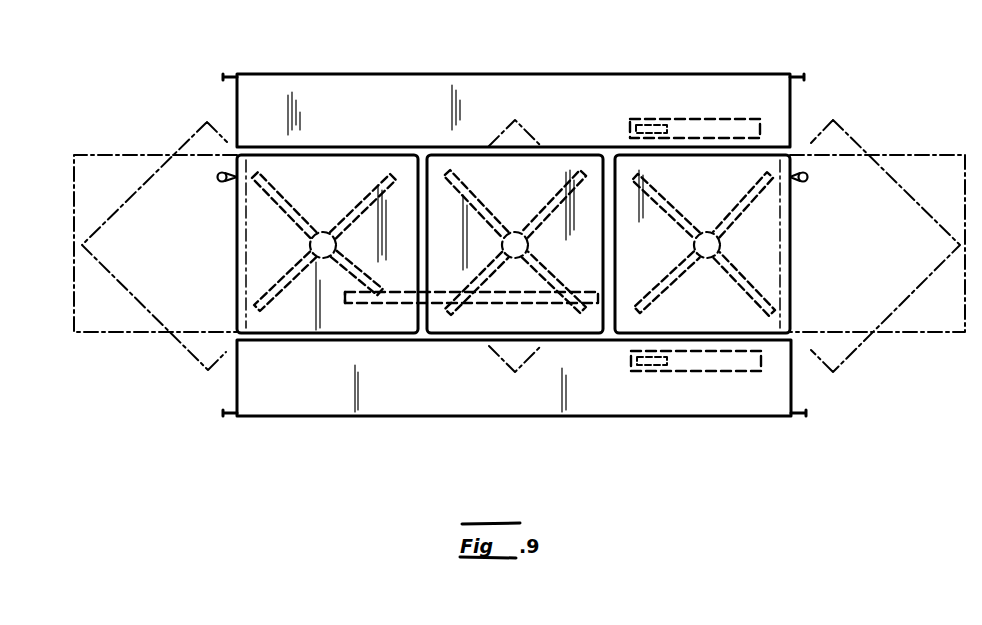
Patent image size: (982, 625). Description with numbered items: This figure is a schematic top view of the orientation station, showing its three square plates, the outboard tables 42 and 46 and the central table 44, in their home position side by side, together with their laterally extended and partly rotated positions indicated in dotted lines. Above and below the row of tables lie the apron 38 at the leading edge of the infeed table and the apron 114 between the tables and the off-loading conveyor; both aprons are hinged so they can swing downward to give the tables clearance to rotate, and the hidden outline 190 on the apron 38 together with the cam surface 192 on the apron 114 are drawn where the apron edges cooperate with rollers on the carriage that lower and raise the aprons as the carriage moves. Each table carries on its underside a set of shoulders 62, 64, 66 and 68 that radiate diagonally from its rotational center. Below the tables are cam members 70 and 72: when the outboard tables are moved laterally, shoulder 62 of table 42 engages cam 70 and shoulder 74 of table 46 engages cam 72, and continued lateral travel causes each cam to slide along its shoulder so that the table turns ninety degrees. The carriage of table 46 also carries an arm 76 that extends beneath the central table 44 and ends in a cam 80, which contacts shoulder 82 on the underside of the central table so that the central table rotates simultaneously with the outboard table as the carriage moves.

The apron 38 is at (604, 73).
The apron 114 is at (608, 402).
The square plate (outboard orientation table) 46 is at (358, 172).
The square plate (central orientation table) 44 is at (543, 172).
The square plate (outboard orientation table) 42 is at (773, 253).
The upper latch bracket 190 is at (683, 127).
The cam surface 192 is at (718, 358).
The cam member 72 is at (218, 180).
The cam member 70 is at (806, 185).
The shoulder 74 is at (275, 207).
The shoulder 82 is at (533, 257).
The cam 80 is at (593, 297).
The arm 76 is at (470, 304).
The shoulder 68 is at (624, 265).
The shoulder 62 is at (743, 212).
The shoulder 64 is at (768, 280).
The shoulder 66 is at (668, 288).